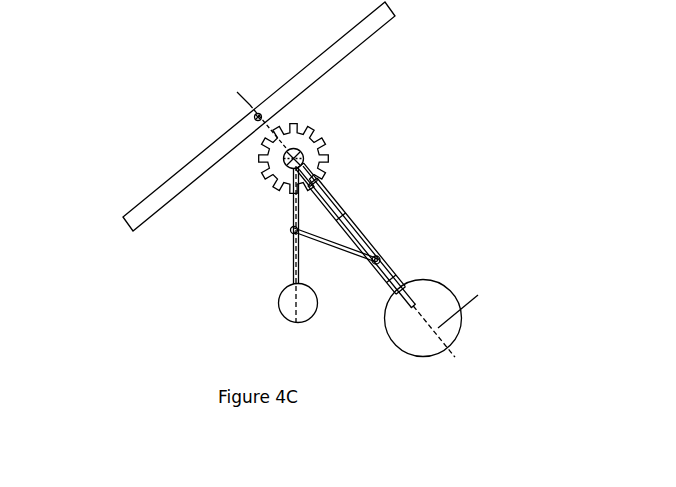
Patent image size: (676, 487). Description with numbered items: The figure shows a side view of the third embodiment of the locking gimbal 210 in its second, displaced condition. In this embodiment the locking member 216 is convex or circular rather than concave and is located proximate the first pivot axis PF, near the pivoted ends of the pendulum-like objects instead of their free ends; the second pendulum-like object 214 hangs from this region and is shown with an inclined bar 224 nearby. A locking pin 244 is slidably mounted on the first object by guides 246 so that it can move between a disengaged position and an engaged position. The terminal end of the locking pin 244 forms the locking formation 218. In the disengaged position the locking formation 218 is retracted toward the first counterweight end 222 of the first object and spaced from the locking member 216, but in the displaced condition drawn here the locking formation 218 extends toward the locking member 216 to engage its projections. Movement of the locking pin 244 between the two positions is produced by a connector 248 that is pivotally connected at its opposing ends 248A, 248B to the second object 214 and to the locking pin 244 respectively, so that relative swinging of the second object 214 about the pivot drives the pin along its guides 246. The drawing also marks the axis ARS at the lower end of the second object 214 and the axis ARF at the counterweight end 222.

The drive assembly 210 is at (470, 64).
The second pendulum-like object 214 is at (292, 257).
The locking member 216 is at (318, 137).
The locking formation 218 is at (330, 188).
The first counterweight end 222 is at (462, 323).
The bar 224 is at (150, 199).
The locking pin 244 is at (352, 226).
The guides 246 is at (341, 214).
The connector 248 is at (335, 247).
The end of connector 248A is at (290, 230).
The end of connector 248B is at (380, 258).
The first pivot axis PF is at (304, 158).
The rear suspension axis ARS is at (292, 312).
The rear frame axis ARF is at (467, 303).